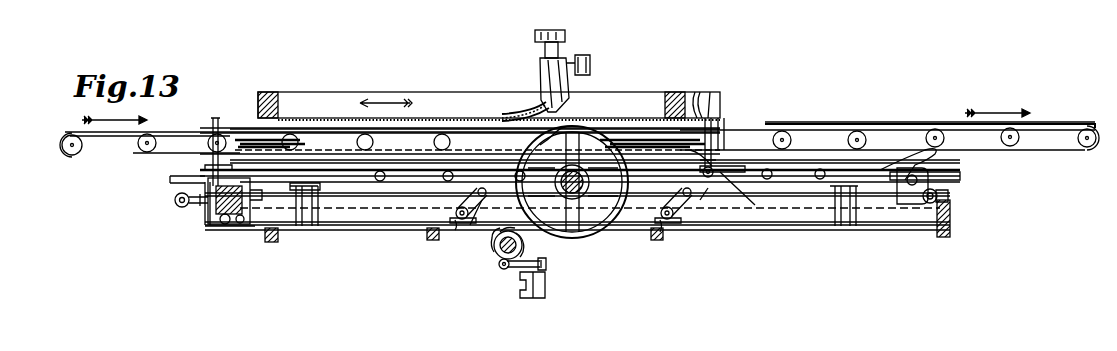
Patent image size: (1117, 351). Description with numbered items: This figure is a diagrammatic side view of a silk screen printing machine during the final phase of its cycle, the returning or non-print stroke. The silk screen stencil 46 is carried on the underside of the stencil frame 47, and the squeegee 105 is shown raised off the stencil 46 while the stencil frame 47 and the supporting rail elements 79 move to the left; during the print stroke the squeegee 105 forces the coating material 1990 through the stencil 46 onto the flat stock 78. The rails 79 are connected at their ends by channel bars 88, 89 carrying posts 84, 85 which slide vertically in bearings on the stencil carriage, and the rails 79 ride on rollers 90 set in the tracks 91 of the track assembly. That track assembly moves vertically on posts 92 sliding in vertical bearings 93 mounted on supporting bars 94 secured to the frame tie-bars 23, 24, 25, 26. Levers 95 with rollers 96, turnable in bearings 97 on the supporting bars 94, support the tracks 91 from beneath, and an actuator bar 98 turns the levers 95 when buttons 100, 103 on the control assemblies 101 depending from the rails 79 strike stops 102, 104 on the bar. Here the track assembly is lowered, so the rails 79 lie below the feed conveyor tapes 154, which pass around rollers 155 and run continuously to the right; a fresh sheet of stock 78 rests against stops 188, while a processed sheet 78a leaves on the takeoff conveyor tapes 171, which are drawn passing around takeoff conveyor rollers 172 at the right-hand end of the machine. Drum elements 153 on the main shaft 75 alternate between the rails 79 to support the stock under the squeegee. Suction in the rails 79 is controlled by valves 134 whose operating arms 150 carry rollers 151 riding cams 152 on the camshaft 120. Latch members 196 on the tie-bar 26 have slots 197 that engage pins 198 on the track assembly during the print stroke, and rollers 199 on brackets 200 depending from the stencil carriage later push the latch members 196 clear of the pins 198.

The feed conveyor tapes 154 is at (68, 136).
The rollers 155 is at (140, 148).
The channel bar 88 is at (205, 168).
The post 84 is at (213, 124).
The flat stock 78 is at (237, 127).
The stencil frame 47 is at (335, 100).
The silk screen stencil 46 is at (640, 116).
The brackets 200 is at (718, 93).
The squeegee 105 is at (535, 66).
The coating material 1990 is at (520, 112).
The stops 188 is at (572, 125).
The main shaft 75 is at (583, 175).
The spring-cushioned buttons 100 is at (262, 196).
The stops 104 is at (175, 200).
The spring-cushioned buttons 103 is at (207, 205).
The control assemblies 101 is at (208, 226).
The tracks 91 is at (172, 181).
The tie-bar 23 is at (266, 240).
The tie-bar 24 is at (428, 238).
The tie-bar 25 is at (655, 240).
The tie-bar 26 is at (940, 236).
The vertical bearings 93 is at (322, 220).
The actuator bar 98 is at (392, 197).
The posts 92 is at (318, 209).
The supporting bars 94 is at (378, 228).
The levers 95 is at (456, 210).
The rollers 96 is at (480, 222).
The bearings 97 is at (455, 231).
The drum elements 153 is at (585, 238).
The cams 152 is at (525, 254).
The stops 102 is at (492, 250).
The camshaft 120 is at (499, 267).
The rollers 151 is at (503, 270).
The operating arms 150 is at (520, 280).
The valves 134 is at (546, 290).
The supporting rail elements 79 is at (595, 160).
The rollers 90 is at (418, 168).
The channel bar 89 is at (750, 168).
The post 85 is at (740, 130).
The rollers 199 is at (748, 198).
The processed sheet of stock 78a is at (838, 121).
The takeoff conveyor tapes 171 is at (764, 125).
The conveyor rollers 172 is at (847, 140).
The latch members 196 is at (903, 168).
The slots 197 is at (900, 200).
The pins 198 is at (925, 200).